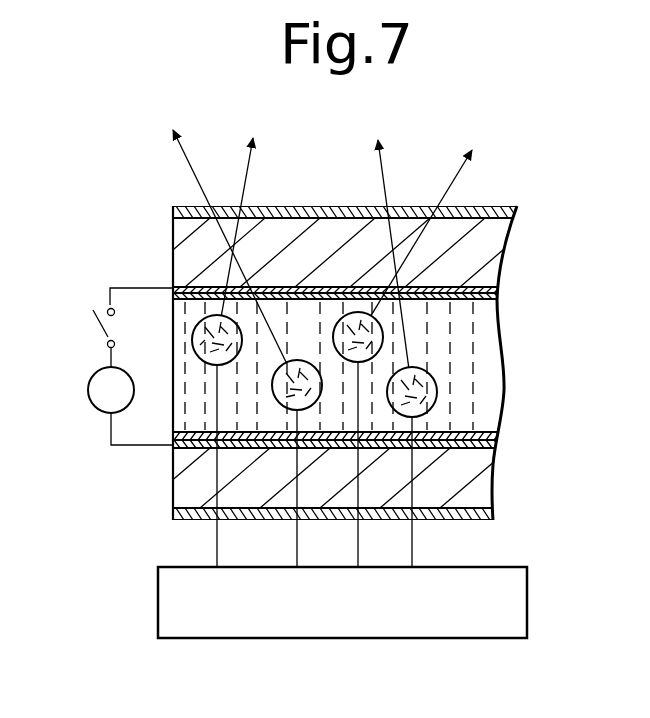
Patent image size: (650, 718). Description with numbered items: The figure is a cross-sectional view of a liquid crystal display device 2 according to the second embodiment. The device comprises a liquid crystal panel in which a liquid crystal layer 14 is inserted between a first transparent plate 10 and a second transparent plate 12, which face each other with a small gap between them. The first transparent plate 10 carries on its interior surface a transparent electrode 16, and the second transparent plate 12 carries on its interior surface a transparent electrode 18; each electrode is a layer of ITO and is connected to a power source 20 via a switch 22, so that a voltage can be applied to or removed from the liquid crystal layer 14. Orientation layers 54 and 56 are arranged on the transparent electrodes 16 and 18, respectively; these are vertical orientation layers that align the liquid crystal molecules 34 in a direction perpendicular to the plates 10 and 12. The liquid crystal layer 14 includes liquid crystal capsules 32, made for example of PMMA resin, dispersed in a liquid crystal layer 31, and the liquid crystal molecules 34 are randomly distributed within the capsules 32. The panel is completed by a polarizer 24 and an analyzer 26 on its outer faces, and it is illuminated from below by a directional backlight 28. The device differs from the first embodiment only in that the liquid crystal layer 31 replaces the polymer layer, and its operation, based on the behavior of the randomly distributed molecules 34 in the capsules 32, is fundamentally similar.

The liquid crystal display device 2 is at (532, 125).
The first transparent plate 10 is at (480, 492).
The second transparent plate 12 is at (488, 250).
The liquid crystal layer 14 is at (505, 370).
The transparent electrode 16 is at (196, 448).
The transparent electrode 18 is at (196, 288).
The power source 20 is at (89, 392).
The switch 22 is at (93, 321).
The polarizer 24 is at (477, 522).
The analyzer 26 is at (475, 211).
The directional backlight 28 is at (362, 638).
The liquid crystal layer 31 is at (473, 352).
The liquid crystal capsules 32 is at (297, 360).
The liquid crystal molecules 34 is at (360, 313).
The orientation layer 54 is at (480, 432).
The orientation layer 56 is at (499, 299).